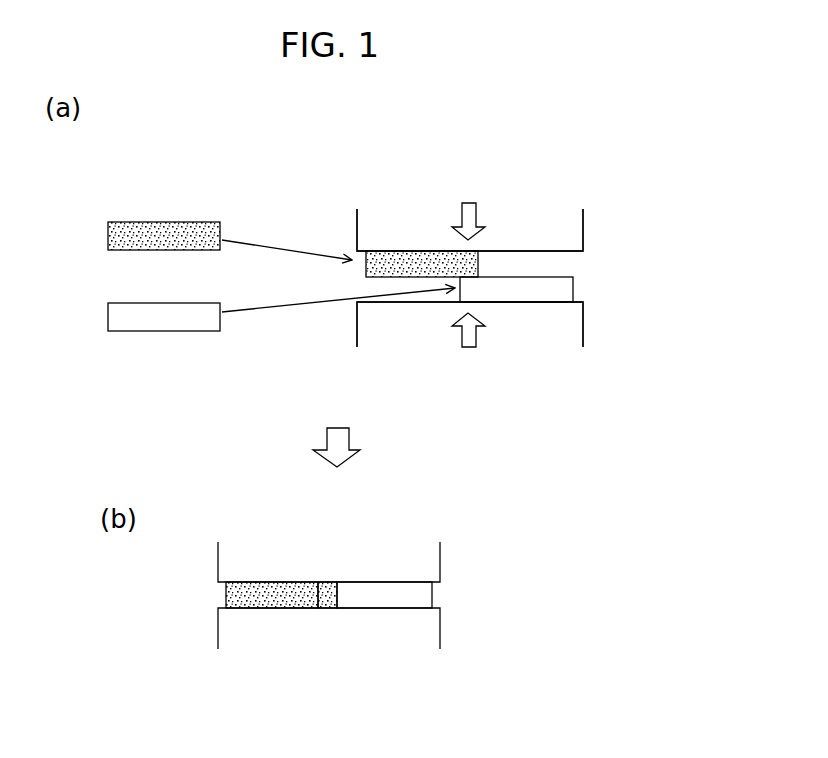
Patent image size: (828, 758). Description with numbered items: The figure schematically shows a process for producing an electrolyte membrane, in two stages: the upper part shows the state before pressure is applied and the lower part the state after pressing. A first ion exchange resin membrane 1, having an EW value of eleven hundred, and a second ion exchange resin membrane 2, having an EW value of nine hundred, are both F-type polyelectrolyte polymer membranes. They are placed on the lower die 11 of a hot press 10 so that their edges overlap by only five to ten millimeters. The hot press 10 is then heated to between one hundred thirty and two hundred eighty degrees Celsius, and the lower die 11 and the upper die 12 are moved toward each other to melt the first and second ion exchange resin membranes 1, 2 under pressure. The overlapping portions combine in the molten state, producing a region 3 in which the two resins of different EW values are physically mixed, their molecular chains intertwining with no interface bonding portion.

The first ion exchange resin membrane 1 is at (168, 222).
The second ion exchange resin membrane 2 is at (174, 320).
The region 3 is at (335, 582).
The hot press 10 is at (565, 173).
The lower die 11 is at (570, 330).
The upper die 12 is at (572, 233).